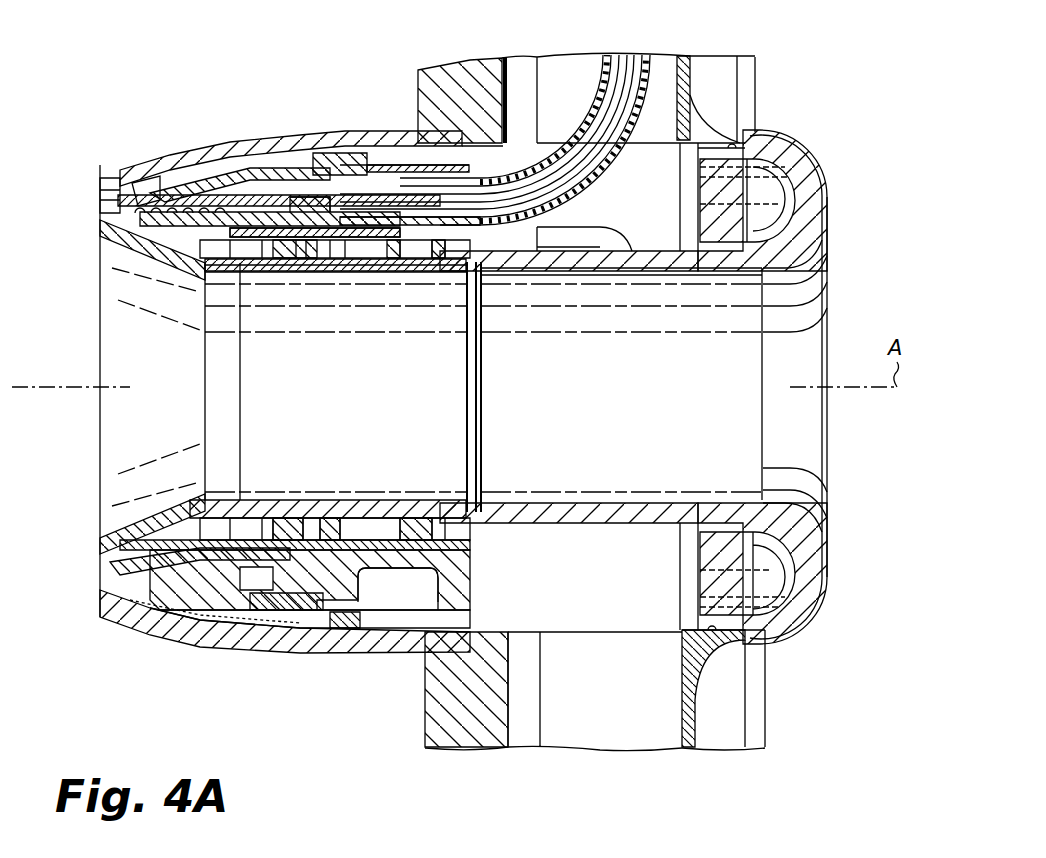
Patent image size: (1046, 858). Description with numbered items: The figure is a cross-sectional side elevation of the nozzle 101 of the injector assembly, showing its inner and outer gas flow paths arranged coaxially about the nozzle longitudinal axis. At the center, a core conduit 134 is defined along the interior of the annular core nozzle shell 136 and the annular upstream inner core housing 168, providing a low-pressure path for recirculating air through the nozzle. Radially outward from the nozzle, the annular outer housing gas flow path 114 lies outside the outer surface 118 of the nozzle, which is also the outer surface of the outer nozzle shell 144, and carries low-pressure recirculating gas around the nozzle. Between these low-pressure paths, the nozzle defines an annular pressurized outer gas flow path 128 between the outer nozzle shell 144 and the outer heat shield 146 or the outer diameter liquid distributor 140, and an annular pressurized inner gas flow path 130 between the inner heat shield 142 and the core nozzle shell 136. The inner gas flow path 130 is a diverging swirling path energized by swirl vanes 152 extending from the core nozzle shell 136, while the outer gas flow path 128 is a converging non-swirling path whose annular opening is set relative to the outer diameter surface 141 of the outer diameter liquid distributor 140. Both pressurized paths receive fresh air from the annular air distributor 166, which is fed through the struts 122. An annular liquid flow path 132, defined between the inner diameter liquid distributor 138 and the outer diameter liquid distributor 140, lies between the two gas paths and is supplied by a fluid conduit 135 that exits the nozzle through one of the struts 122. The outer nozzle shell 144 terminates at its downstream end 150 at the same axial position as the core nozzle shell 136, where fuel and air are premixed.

The nozzle 101 is at (56, 106).
The outer housing gas flow path 114 is at (352, 83).
The outer surface 118 is at (289, 132).
The struts 122 is at (705, 698).
The outer gas flow path 128 is at (172, 176).
The inner gas flow path 130 is at (242, 530).
The liquid flow path 132 is at (256, 198).
The core conduit 134 is at (600, 410).
The fluid conduit 135 is at (388, 190).
The core nozzle shell 136 is at (347, 518).
The inner diameter liquid distributor 138 is at (182, 522).
The outer diameter liquid distributor 140 is at (150, 612).
The outer diameter surface 141 is at (135, 182).
The inner heat shield 142 is at (367, 522).
The outer nozzle shell 144 is at (247, 640).
The outer heat shield 146 is at (346, 628).
The downstream end 150 is at (100, 183).
The swirl vanes 152 is at (338, 272).
The annular air distributor 166 is at (580, 555).
The upstream inner core housing 168 is at (720, 255).